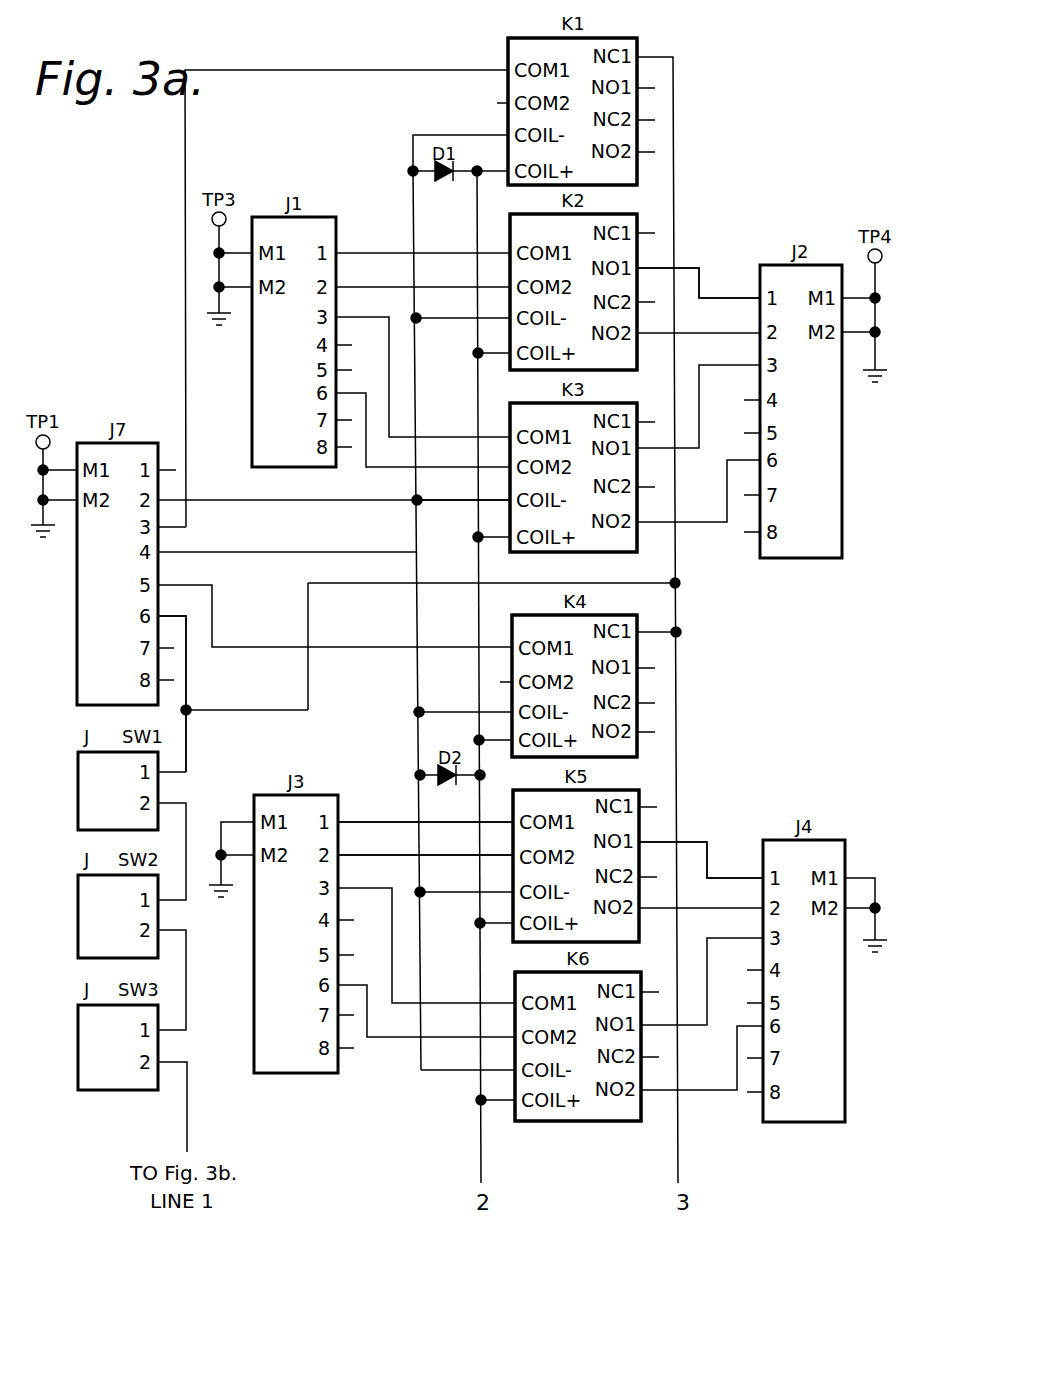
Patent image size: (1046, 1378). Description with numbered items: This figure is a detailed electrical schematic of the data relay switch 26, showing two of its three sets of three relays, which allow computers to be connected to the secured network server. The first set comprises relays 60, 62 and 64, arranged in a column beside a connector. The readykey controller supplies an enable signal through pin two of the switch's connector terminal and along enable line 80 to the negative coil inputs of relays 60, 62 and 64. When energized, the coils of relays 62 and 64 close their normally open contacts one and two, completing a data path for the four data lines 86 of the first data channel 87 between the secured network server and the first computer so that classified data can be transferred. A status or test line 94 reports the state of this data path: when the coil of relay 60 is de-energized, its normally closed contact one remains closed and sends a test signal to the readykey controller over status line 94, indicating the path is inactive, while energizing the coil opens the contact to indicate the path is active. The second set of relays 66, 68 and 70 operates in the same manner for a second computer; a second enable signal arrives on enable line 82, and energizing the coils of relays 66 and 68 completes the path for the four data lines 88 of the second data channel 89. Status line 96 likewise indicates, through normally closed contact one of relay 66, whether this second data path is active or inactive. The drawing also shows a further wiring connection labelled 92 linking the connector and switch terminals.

The data relay switch 26 is at (692, 90).
The relay 60 is at (637, 172).
The relay 62 is at (640, 218).
The relay 64 is at (638, 548).
The relay 66 is at (638, 620).
The relay 68 is at (640, 798).
The relay 70 is at (616, 1122).
The enable line 80 is at (308, 501).
The enable line 82 is at (419, 679).
The data lines 86 is at (383, 292).
The first data channel 87 is at (715, 290).
The data lines 88 is at (384, 852).
The second data channel 89 is at (725, 870).
The switch chain line 92 is at (186, 683).
The status line 94 is at (328, 72).
The status line 96 is at (284, 647).